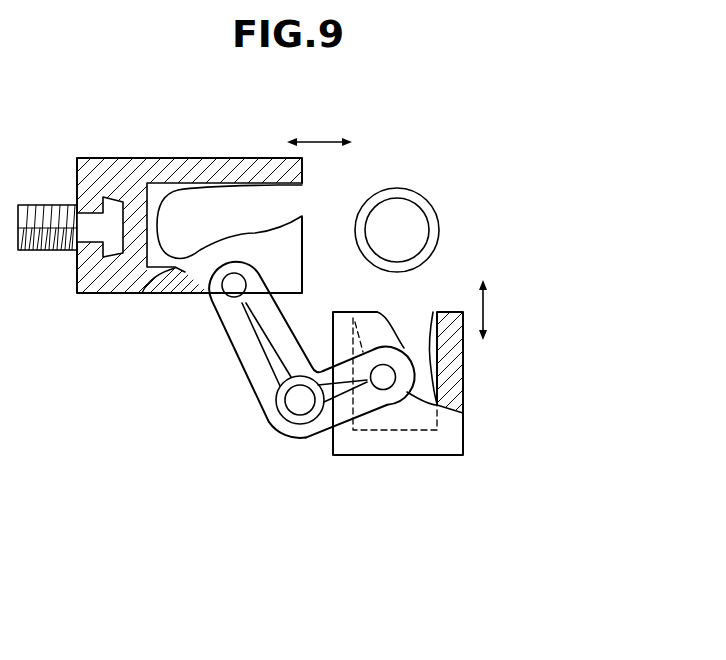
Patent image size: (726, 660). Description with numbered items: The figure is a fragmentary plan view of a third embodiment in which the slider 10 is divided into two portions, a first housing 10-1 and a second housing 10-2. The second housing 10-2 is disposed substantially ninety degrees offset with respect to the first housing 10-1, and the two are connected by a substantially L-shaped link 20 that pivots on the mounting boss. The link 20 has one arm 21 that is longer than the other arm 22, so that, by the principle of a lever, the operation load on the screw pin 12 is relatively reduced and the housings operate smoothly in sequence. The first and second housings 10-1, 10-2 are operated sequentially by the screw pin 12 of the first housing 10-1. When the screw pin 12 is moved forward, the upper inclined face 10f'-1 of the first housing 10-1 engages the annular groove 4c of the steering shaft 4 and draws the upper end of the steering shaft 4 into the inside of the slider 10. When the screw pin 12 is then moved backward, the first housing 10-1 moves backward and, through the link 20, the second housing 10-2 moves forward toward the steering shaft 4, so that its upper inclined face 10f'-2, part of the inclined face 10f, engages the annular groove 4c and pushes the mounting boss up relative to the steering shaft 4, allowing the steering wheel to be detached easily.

The steering shaft 4 is at (430, 204).
The annular groove 4c is at (432, 223).
The slider 10 is at (75, 537).
The first housing 10-1 is at (117, 293).
The second housing 10-2 is at (410, 457).
The inclined face 10f is at (389, 246).
The upper inclined face 10f'-1 is at (228, 173).
The upper inclined face 10f'-2 is at (527, 323).
The screw pin 12 is at (45, 252).
The link 20 is at (272, 432).
The arm 21 is at (250, 362).
The arm 22 is at (377, 407).